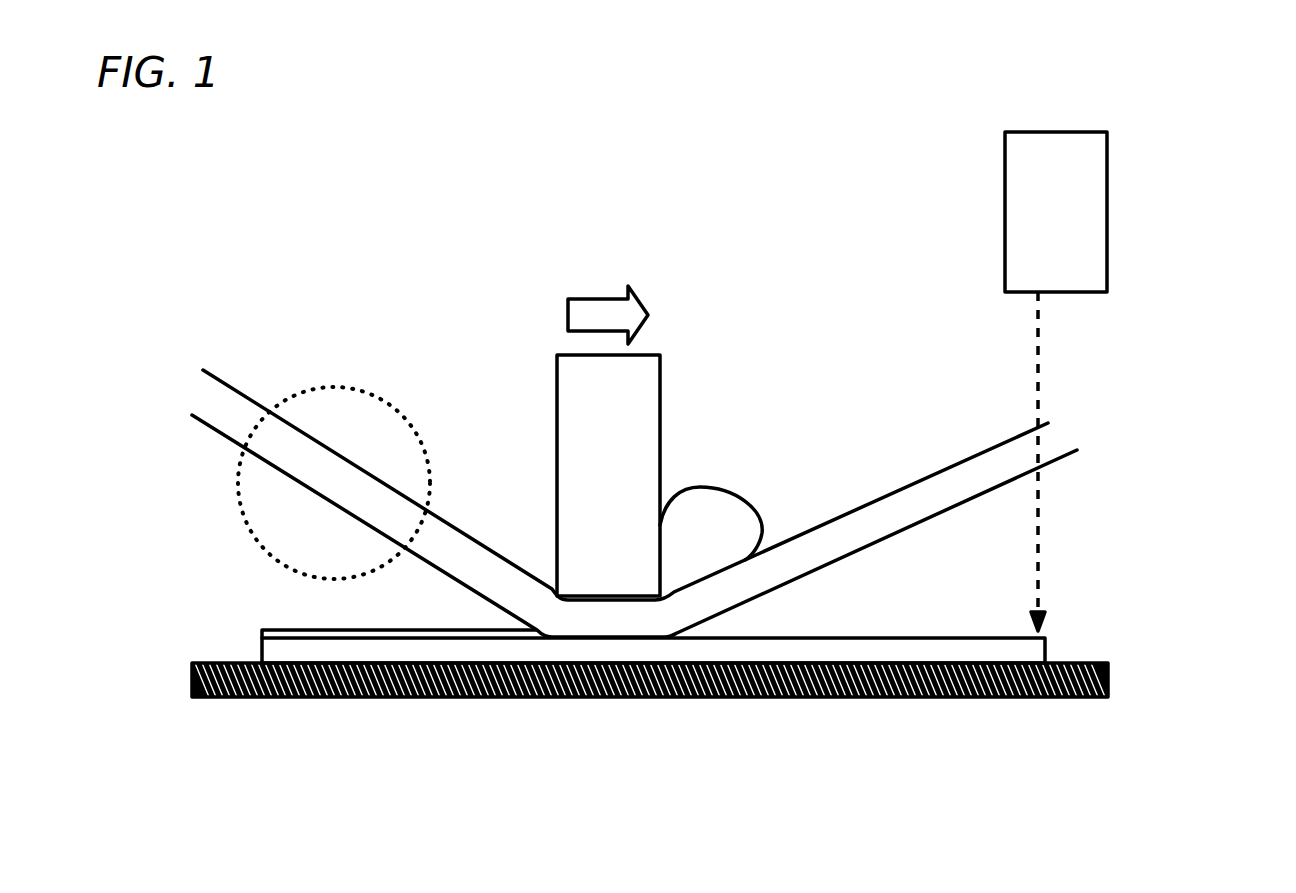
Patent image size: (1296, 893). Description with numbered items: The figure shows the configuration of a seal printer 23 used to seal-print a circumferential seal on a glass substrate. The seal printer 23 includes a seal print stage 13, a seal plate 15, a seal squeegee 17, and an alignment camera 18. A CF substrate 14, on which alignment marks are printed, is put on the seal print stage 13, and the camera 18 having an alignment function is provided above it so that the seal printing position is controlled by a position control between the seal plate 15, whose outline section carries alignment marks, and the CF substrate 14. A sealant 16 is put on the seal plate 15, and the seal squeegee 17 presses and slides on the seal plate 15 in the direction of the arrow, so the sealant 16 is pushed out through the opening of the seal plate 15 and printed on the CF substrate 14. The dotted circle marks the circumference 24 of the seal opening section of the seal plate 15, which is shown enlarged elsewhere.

The seal print stage 13 is at (1068, 700).
The CF substrate 14 is at (1030, 652).
The seal plate 15 is at (990, 472).
The sealant 16 is at (708, 510).
The seal squeegee 17 is at (613, 392).
The alignment camera 18 is at (1073, 223).
The seal printer 23 is at (242, 213).
The circumference of the seal opening section 24 is at (355, 385).